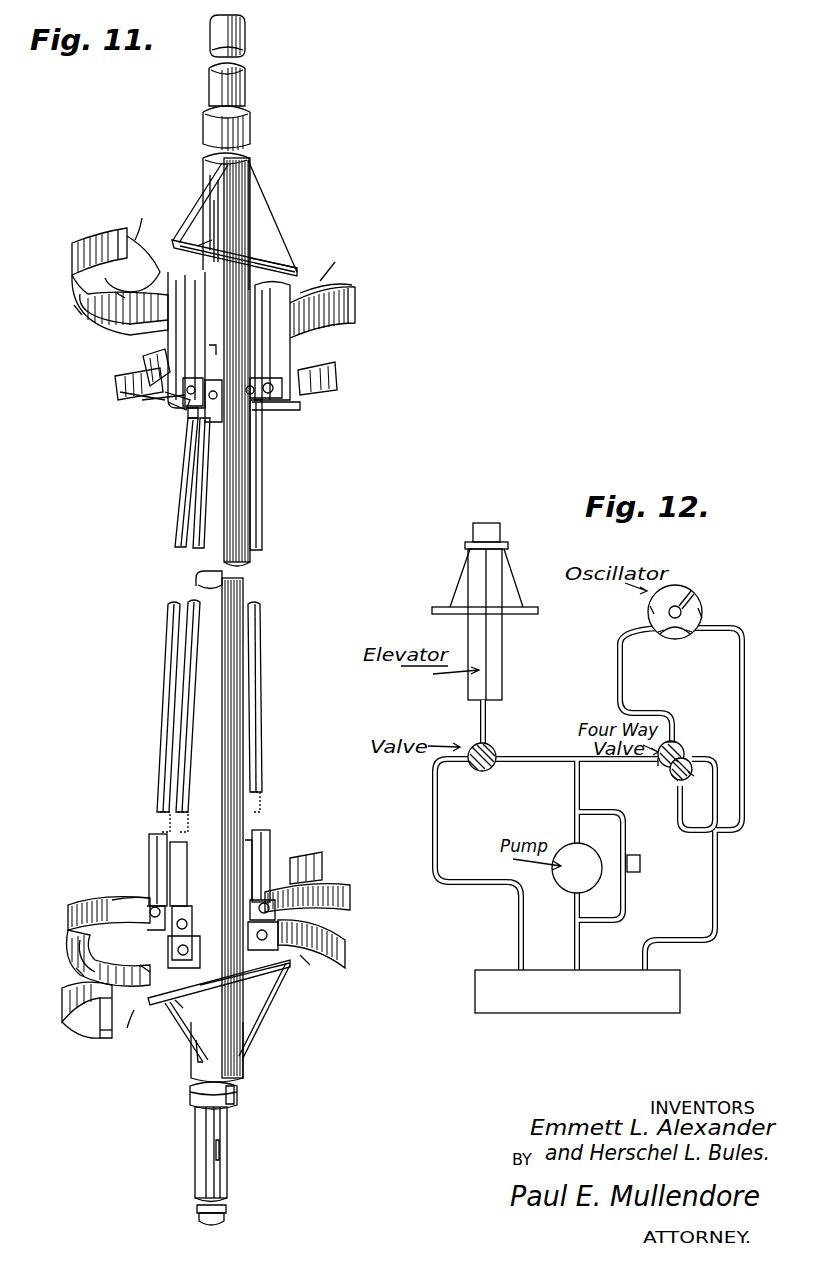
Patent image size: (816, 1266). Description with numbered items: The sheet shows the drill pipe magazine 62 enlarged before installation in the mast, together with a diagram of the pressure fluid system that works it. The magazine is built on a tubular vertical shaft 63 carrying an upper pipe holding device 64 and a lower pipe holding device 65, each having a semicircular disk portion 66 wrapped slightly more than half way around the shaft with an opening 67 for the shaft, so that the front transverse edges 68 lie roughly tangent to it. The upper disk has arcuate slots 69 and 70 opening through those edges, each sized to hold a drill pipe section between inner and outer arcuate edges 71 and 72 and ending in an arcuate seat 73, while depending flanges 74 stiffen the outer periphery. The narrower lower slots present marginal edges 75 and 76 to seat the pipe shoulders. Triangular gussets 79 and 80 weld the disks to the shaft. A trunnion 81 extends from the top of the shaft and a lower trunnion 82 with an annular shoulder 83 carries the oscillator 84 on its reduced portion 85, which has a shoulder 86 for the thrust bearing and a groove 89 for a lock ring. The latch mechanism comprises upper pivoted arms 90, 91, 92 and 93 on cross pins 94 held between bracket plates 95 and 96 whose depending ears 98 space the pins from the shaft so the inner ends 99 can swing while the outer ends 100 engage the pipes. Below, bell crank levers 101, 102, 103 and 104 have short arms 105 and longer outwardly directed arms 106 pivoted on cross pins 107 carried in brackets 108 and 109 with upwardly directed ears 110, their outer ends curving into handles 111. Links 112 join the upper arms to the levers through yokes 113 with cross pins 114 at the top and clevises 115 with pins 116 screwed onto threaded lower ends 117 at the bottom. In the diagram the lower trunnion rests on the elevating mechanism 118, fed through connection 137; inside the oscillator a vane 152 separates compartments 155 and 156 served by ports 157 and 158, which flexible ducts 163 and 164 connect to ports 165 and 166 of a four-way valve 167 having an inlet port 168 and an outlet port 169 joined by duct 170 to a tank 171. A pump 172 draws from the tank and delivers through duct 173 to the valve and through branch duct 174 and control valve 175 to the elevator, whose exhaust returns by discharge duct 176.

In FIG. 11, the magazine 62 is at (257, 174).
In FIG. 11, the vertical shaft 63 is at (245, 589).
In FIG. 11, the upper pipe holding device 64 is at (76, 246).
In FIG. 11, the lower pipe holding device 65 is at (66, 1006).
In FIG. 11, the disk portion 66 is at (170, 240).
In FIG. 11, the opening 67 is at (272, 262).
In FIG. 11, the front transverse edges 68 is at (250, 262).
In FIG. 11, the arcuate slot 69 is at (141, 218).
In FIG. 11, the arcuate slot 70 is at (338, 276).
In FIG. 11, the inner arcuate edge 71 is at (212, 235).
In FIG. 11, the outer arcuate edge 72 is at (74, 284).
In FIG. 11, the arcuate seat 73 is at (120, 296).
In FIG. 11, the depending flange 74 is at (78, 312).
In FIG. 11, the marginal edge 75 is at (78, 968).
In FIG. 11, the marginal edge 76 is at (142, 968).
In FIG. 11, the gusset 79 is at (260, 216).
In FIG. 11, the gusset 80 is at (248, 1018).
In FIG. 11, the trunnion 81 is at (246, 74).
In FIG. 11, the trunnion 82 is at (240, 1095).
In FIG. 11, the annular shoulder 83 is at (196, 1104).
In FIG. 12, the oscillator 84 is at (702, 606).
In FIG. 11, the reduced portion 85 is at (233, 1168).
In FIG. 11, the shoulder 86 is at (228, 1203).
In FIG. 11, the groove 89 is at (197, 1218).
In FIG. 11, the upper pivoted arm 90 is at (114, 385).
In FIG. 11, the upper pivoted arm 91 is at (141, 358).
In FIG. 11, the upper pivoted arm 92 is at (256, 410).
In FIG. 11, the upper pivoted arm 93 is at (318, 374).
In FIG. 11, the cross pin 94 is at (180, 402).
In FIG. 11, the bracket plate 95 is at (168, 342).
In FIG. 11, the bracket plate 96 is at (207, 350).
In FIG. 11, the depending ear 98 is at (170, 396).
In FIG. 11, the inner end 99 is at (192, 414).
In FIG. 11, the outer end 100 is at (124, 393).
In FIG. 11, the bell crank lever 101 is at (128, 905).
In FIG. 11, the bell crank lever 102 is at (156, 928).
In FIG. 11, the bell crank lever 103 is at (272, 866).
In FIG. 11, the bell crank lever 104 is at (322, 892).
In FIG. 11, the short arm 105 is at (332, 942).
In FIG. 11, the longer outwardly directed arm 106 is at (100, 900).
In FIG. 11, the cross pin 107 is at (187, 942).
In FIG. 11, the bracket 108 is at (186, 914).
In FIG. 11, the bracket 109 is at (190, 954).
In FIG. 11, the upwardly directed ear 110 is at (188, 926).
In FIG. 11, the handle 111 is at (70, 908).
In FIG. 11, the link 112 is at (170, 668).
In FIG. 11, the yoke 113 is at (218, 402).
In FIG. 11, the cross pin 114 is at (262, 384).
In FIG. 11, the clevis 115 is at (271, 852).
In FIG. 11, the pin 116 is at (308, 874).
In FIG. 11, the threaded lower end 117 is at (264, 820).
In FIG. 12, the elevating mechanism 118 is at (504, 546).
In FIG. 12, the connection 137 is at (487, 705).
In FIG. 12, the vane 152 is at (684, 592).
In FIG. 12, the compartment 155 is at (649, 605).
In FIG. 12, the compartment 156 is at (702, 613).
In FIG. 12, the port 157 is at (660, 636).
In FIG. 12, the port 158 is at (692, 636).
In FIG. 12, the flexible duct 163 is at (619, 668).
In FIG. 12, the flexible duct 164 is at (744, 678).
In FIG. 12, the port 165 is at (678, 746).
In FIG. 12, the port 166 is at (672, 778).
In FIG. 12, the four-way valve 167 is at (686, 756).
In FIG. 12, the inlet port 168 is at (660, 764).
In FIG. 12, the outlet port 169 is at (687, 773).
In FIG. 12, the duct 170 is at (719, 860).
In FIG. 12, the tank 171 is at (680, 990).
In FIG. 12, the pump 172 is at (566, 845).
In FIG. 12, the duct 173 is at (573, 781).
In FIG. 12, the branch duct 174 is at (537, 770).
In FIG. 12, the control valve 175 is at (478, 771).
In FIG. 12, the discharge duct 176 is at (432, 798).